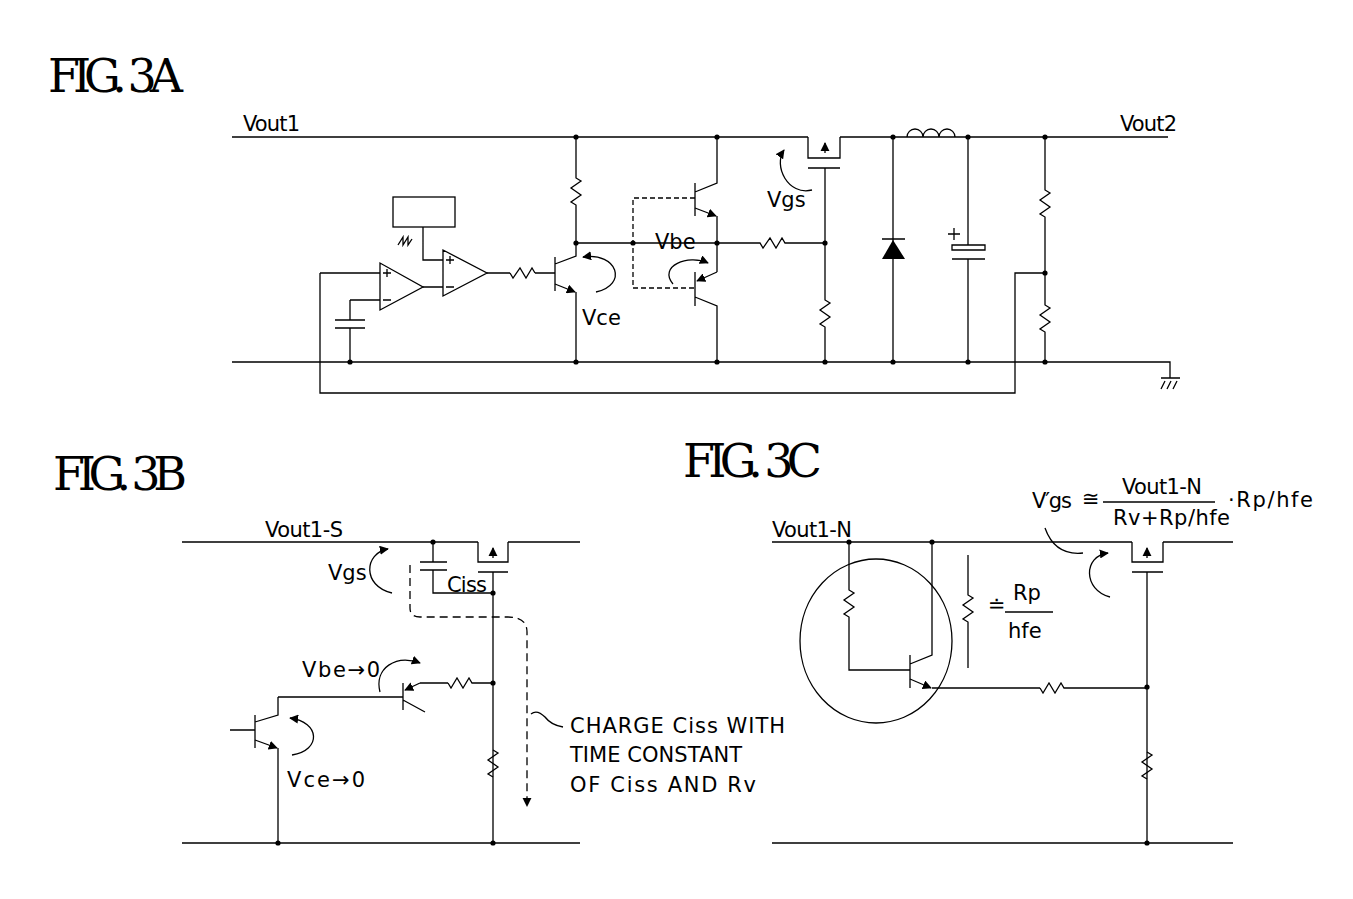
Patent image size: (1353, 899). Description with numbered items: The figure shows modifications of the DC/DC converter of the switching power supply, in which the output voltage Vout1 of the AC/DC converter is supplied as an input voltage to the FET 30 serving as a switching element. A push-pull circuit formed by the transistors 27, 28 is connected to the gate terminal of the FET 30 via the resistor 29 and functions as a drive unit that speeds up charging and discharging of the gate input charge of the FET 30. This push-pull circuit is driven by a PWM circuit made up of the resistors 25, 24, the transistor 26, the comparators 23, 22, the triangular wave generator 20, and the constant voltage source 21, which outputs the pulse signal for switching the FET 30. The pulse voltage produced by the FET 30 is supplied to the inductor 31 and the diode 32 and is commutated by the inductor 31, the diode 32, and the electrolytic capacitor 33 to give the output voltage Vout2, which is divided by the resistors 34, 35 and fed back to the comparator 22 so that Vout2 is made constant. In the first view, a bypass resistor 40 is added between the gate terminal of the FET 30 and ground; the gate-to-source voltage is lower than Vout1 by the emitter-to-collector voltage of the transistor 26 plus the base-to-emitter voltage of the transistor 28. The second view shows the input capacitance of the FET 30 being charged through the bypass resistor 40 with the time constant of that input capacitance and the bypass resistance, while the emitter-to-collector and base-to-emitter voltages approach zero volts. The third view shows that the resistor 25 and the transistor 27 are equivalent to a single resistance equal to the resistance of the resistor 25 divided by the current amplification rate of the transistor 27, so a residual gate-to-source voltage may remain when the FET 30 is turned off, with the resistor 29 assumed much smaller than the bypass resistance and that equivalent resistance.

In FIG. 3A, the triangular wave generator 20 is at (400, 197).
In FIG. 3A, the constant voltage source 21 is at (366, 330).
In FIG. 3A, the comparator 22 is at (410, 297).
In FIG. 3A, the comparator 23 is at (472, 285).
In FIG. 3A, the resistor 24 is at (523, 284).
In FIG. 3A, the resistor 25 is at (570, 185).
In FIG. 3C, the resistor 25 is at (857, 603).
In FIG. 3A, the transistor 26 is at (553, 261).
In FIG. 3B, the transistor 26 is at (260, 715).
In FIG. 3A, the transistor 27 is at (691, 184).
In FIG. 3C, the transistor 27 is at (908, 659).
In FIG. 3A, the transistor 28 is at (689, 299).
In FIG. 3B, the transistor 28 is at (400, 717).
In FIG. 3A, the resistor 29 is at (766, 252).
In FIG. 3B, the resistor 29 is at (472, 690).
In FIG. 3C, the resistor 29 is at (1061, 695).
In FIG. 3A, the FET 30 is at (833, 172).
In FIG. 3B, the FET 30 is at (500, 575).
In FIG. 3C, the FET 30 is at (1155, 575).
In FIG. 3A, the inductor 31 is at (938, 142).
In FIG. 3A, the diode 32 is at (897, 262).
In FIG. 3A, the electrolytic capacitor 33 is at (983, 244).
In FIG. 3A, the resistor 34 is at (1050, 191).
In FIG. 3A, the resistor 35 is at (1050, 306).
In FIG. 3A, the bypass resistor 40 is at (828, 306).
In FIG. 3B, the bypass resistor 40 is at (490, 780).
In FIG. 3C, the bypass resistor 40 is at (1145, 777).